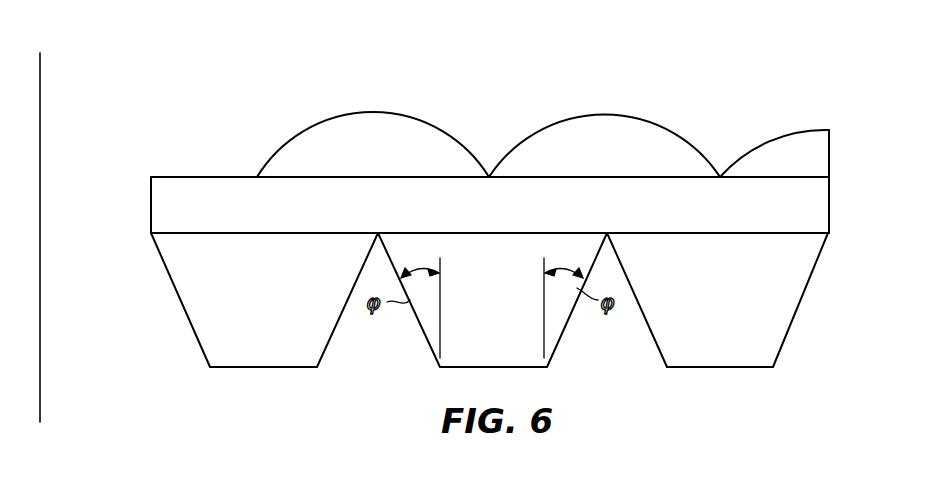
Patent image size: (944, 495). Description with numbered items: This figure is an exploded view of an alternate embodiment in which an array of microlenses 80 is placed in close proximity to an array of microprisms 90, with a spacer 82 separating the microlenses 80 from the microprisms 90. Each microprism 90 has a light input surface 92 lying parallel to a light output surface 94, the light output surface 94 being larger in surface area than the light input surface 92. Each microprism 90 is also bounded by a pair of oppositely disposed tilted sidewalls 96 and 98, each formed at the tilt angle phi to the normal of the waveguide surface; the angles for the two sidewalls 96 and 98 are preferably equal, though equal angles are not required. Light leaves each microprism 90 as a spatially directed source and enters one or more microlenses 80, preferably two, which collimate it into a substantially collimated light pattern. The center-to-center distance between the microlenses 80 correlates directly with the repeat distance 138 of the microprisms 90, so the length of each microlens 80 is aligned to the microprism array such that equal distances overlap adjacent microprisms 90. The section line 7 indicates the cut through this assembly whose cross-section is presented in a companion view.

The section line 7- 7 is at (32, 65).
The microlens 80 is at (560, 118).
The spacer 82 is at (150, 189).
The microprism 90 is at (795, 322).
The light input surface 92 is at (745, 368).
The light output surface 94 is at (808, 233).
The tilted sidewall 96 is at (177, 291).
The tilted sidewall 98 is at (346, 305).
The repeat distance 138 is at (489, 89).